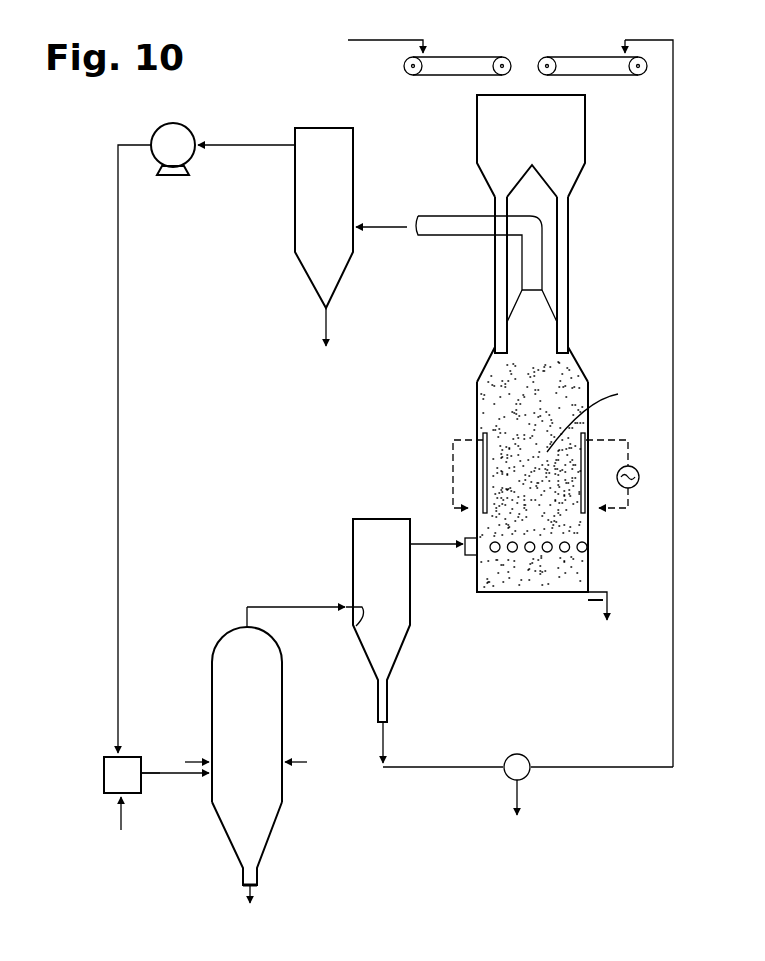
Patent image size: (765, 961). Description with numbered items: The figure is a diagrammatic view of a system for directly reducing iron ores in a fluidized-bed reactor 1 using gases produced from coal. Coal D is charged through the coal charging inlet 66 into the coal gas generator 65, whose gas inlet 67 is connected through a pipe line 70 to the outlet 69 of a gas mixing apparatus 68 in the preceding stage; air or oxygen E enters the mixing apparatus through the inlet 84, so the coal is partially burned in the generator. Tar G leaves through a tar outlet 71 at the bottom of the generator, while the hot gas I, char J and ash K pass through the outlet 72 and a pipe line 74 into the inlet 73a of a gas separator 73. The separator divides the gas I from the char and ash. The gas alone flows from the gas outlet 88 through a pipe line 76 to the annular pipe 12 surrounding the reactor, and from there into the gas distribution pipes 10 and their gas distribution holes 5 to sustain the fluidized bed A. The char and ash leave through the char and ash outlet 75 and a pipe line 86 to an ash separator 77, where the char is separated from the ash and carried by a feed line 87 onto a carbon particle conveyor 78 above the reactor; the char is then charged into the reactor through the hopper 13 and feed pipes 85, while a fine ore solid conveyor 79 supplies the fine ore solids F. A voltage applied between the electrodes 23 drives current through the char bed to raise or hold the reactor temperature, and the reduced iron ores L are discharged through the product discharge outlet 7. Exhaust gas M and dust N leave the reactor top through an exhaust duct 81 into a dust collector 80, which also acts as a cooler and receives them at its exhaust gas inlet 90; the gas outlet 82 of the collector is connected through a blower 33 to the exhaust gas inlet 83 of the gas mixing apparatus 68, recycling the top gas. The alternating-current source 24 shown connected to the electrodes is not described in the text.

The reactor 1 is at (477, 390).
The gas distribution holes 5 is at (515, 553).
The product discharge outlet 7 is at (592, 588).
The gas distribution pipes 10 is at (534, 543).
The annular pipe 12 is at (471, 558).
The hopper 13 is at (578, 150).
The electrodes 23 is at (483, 456).
The AC power source 24 is at (634, 488).
The blower 33 is at (178, 128).
The coal gas generator 65 is at (222, 660).
The coal charging inlet 66 is at (212, 760).
The gas inlet 67 is at (212, 792).
The gas mixing apparatus 68 is at (110, 780).
The outlet 69 is at (142, 770).
The pipe line 70 is at (165, 778).
The tar outlet 71 is at (243, 886).
The outlet 72 is at (247, 622).
The gas separator 73 is at (363, 532).
The inlet 73a is at (362, 622).
The pipe line 74 is at (297, 611).
The char and ash outlet 75 is at (380, 726).
The pipe line 76 is at (422, 552).
The ash separator 77 is at (517, 754).
The carbon particle conveyor 78 is at (585, 68).
The fine ore solid conveyor 79 is at (447, 78).
The dust collector 80 is at (315, 255).
The exhaust duct 81 is at (442, 232).
The gas outlet 82 is at (295, 150).
The exhaust gas inlet 83 is at (119, 752).
The inlet 84 is at (121, 800).
The feed pipes 85 is at (497, 312).
The pipe line 86 is at (440, 772).
The feed line 87 is at (676, 622).
The gas outlet 88 is at (410, 543).
The exhaust gas inlet 90 is at (356, 224).